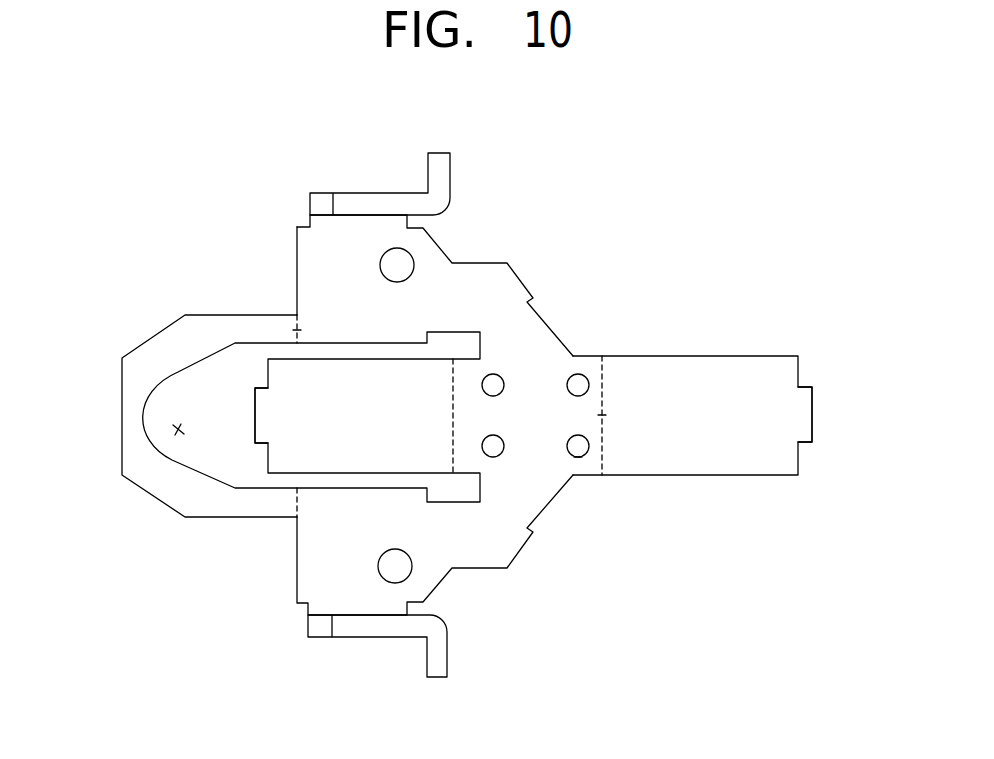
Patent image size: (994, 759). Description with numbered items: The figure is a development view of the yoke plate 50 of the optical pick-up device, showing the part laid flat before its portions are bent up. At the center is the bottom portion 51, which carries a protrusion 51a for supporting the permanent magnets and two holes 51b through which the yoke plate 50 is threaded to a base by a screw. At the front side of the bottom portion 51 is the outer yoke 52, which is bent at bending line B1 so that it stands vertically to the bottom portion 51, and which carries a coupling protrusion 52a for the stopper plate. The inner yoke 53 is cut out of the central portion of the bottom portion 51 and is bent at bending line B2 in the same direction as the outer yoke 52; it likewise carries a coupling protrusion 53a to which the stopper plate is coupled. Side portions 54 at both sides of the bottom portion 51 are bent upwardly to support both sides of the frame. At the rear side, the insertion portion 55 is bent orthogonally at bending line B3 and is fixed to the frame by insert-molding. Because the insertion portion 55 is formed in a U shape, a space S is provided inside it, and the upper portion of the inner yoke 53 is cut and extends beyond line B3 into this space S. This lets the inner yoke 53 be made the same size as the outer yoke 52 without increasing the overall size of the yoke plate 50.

The yoke plate 50 is at (265, 207).
The bottom portion 51 is at (510, 558).
The protrusion 51a is at (501, 377).
The holes 51b is at (403, 260).
The outer yoke 52 is at (730, 356).
The coupling protrusion 52a is at (812, 415).
The inner yoke 53 is at (287, 463).
The coupling protrusion 53a is at (255, 415).
The side portions 54 is at (378, 627).
The insertion portion 55 is at (122, 413).
The space S is at (176, 431).
The bending line B1 is at (602, 415).
The bending line B2 is at (578, 457).
The bending line B3 is at (297, 330).